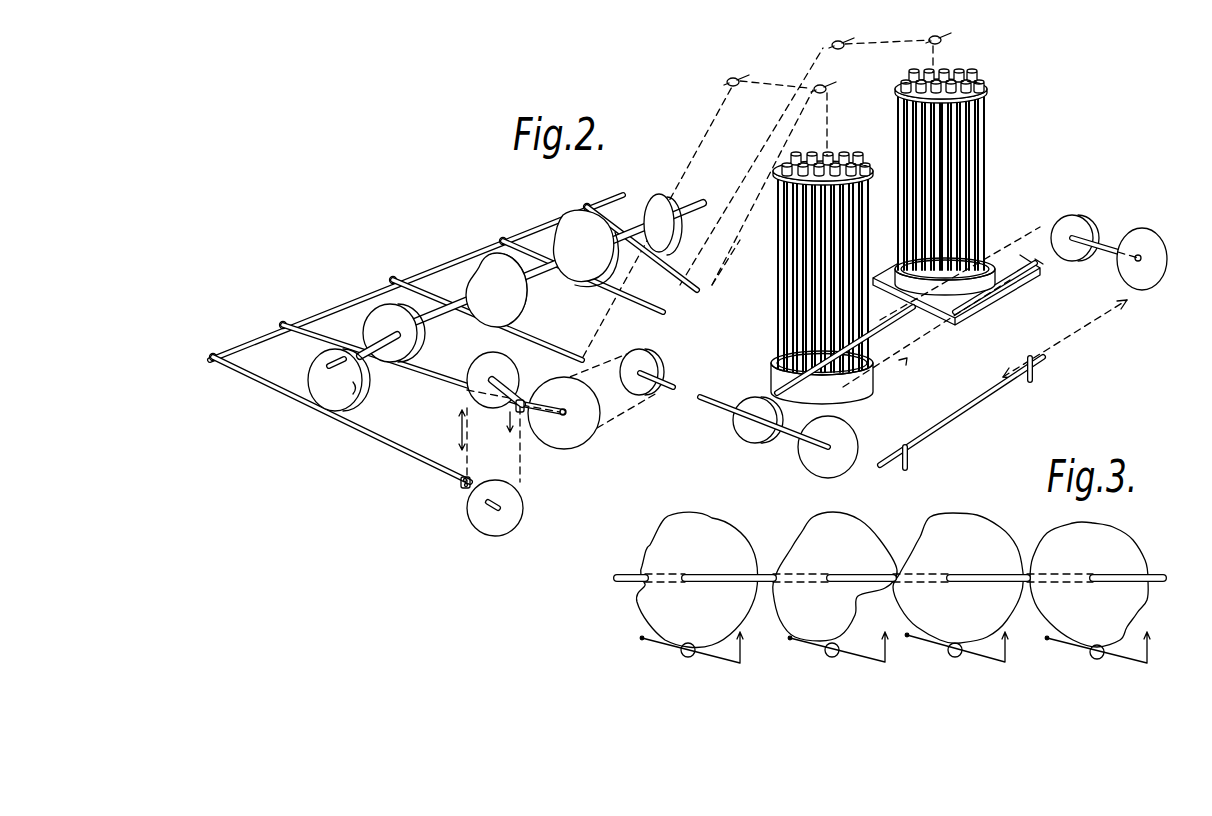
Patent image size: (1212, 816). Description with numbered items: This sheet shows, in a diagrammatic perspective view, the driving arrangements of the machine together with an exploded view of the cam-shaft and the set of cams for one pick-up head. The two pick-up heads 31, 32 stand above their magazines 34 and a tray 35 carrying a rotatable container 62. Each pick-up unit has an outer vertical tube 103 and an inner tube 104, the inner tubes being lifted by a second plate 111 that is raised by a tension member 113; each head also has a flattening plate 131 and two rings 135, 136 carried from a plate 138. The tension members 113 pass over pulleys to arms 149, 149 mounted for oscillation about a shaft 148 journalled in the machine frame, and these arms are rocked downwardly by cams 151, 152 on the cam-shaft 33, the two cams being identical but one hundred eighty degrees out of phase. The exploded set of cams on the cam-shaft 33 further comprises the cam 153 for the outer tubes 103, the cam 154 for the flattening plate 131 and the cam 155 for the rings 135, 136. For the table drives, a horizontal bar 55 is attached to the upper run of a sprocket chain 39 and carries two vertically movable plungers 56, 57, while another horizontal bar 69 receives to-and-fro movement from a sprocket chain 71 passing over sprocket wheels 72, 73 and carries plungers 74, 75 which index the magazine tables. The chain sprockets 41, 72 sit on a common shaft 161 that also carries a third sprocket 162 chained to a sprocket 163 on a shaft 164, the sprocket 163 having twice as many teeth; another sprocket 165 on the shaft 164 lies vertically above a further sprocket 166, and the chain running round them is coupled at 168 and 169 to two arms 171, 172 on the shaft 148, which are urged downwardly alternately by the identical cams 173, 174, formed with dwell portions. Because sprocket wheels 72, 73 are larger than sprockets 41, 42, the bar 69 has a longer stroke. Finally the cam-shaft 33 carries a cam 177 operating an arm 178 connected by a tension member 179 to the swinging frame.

In FIG. 2, the pick-up head 31 is at (797, 291).
In FIG. 2, the pick-up head 32 is at (972, 211).
In FIG. 2, the cam-shaft 33 is at (438, 324).
In FIG. 3, the cam-shaft 33 is at (616, 586).
In FIG. 2, the magazine 34 is at (776, 372).
In FIG. 2, the tray 35 is at (1022, 272).
In FIG. 2, the sprocket chain 39 is at (1040, 225).
In FIG. 2, the chain sprocket 41 is at (740, 440).
In FIG. 2, the sprocket 42 is at (1083, 230).
In FIG. 2, the horizontal bar 55 is at (893, 325).
In FIG. 2, the plunger 56 is at (763, 384).
In FIG. 2, the plunger 57 is at (914, 334).
In FIG. 2, the container 62 is at (972, 267).
In FIG. 2, the horizontal bar 69 is at (977, 412).
In FIG. 2, the sprocket chain 71 is at (1060, 348).
In FIG. 2, the sprocket wheel 72 is at (812, 462).
In FIG. 2, the sprocket wheel 73 is at (1144, 236).
In FIG. 2, the plunger 74 is at (910, 456).
In FIG. 2, the plunger 75 is at (1042, 377).
In FIG. 3, the outer vertical tube 103 is at (706, 647).
In FIG. 3, the inner tube 104 is at (841, 635).
In FIG. 2, the second plate 111 is at (876, 169).
In FIG. 2, the tension member 113 is at (782, 125).
In FIG. 3, the flattening plate 131 is at (971, 638).
In FIG. 3, the ring 135 is at (1125, 644).
In FIG. 3, the ring 136 is at (1097, 647).
In FIG. 3, the plate 138 is at (1125, 631).
In FIG. 2, the shaft 148 is at (447, 262).
In FIG. 2, the arm 149 is at (561, 346).
In FIG. 2, the cam 151 is at (487, 258).
In FIG. 3, the cam 151 is at (876, 536).
In FIG. 2, the cam 152 is at (566, 226).
In FIG. 3, the cam 153 is at (660, 546).
In FIG. 3, the cam 154 is at (996, 532).
In FIG. 3, the cam 155 is at (1136, 558).
In FIG. 2, the common shaft 161 is at (662, 388).
In FIG. 2, the third sprocket 162 is at (655, 369).
In FIG. 2, the sprocket 163 is at (573, 435).
In FIG. 2, the shaft 164 is at (528, 400).
In FIG. 2, the sprocket 165 is at (480, 365).
In FIG. 2, the sprocket 166 is at (480, 527).
In FIG. 2, the coupling point 168 is at (464, 484).
In FIG. 2, the coupling point 169 is at (520, 412).
In FIG. 2, the arm 171 is at (394, 447).
In FIG. 2, the arm 172 is at (437, 388).
In FIG. 2, the cam 173 is at (333, 393).
In FIG. 2, the cam 174 is at (383, 314).
In FIG. 2, the cam 177 is at (657, 200).
In FIG. 2, the arm 178 is at (688, 292).
In FIG. 2, the tension member 179 is at (727, 250).